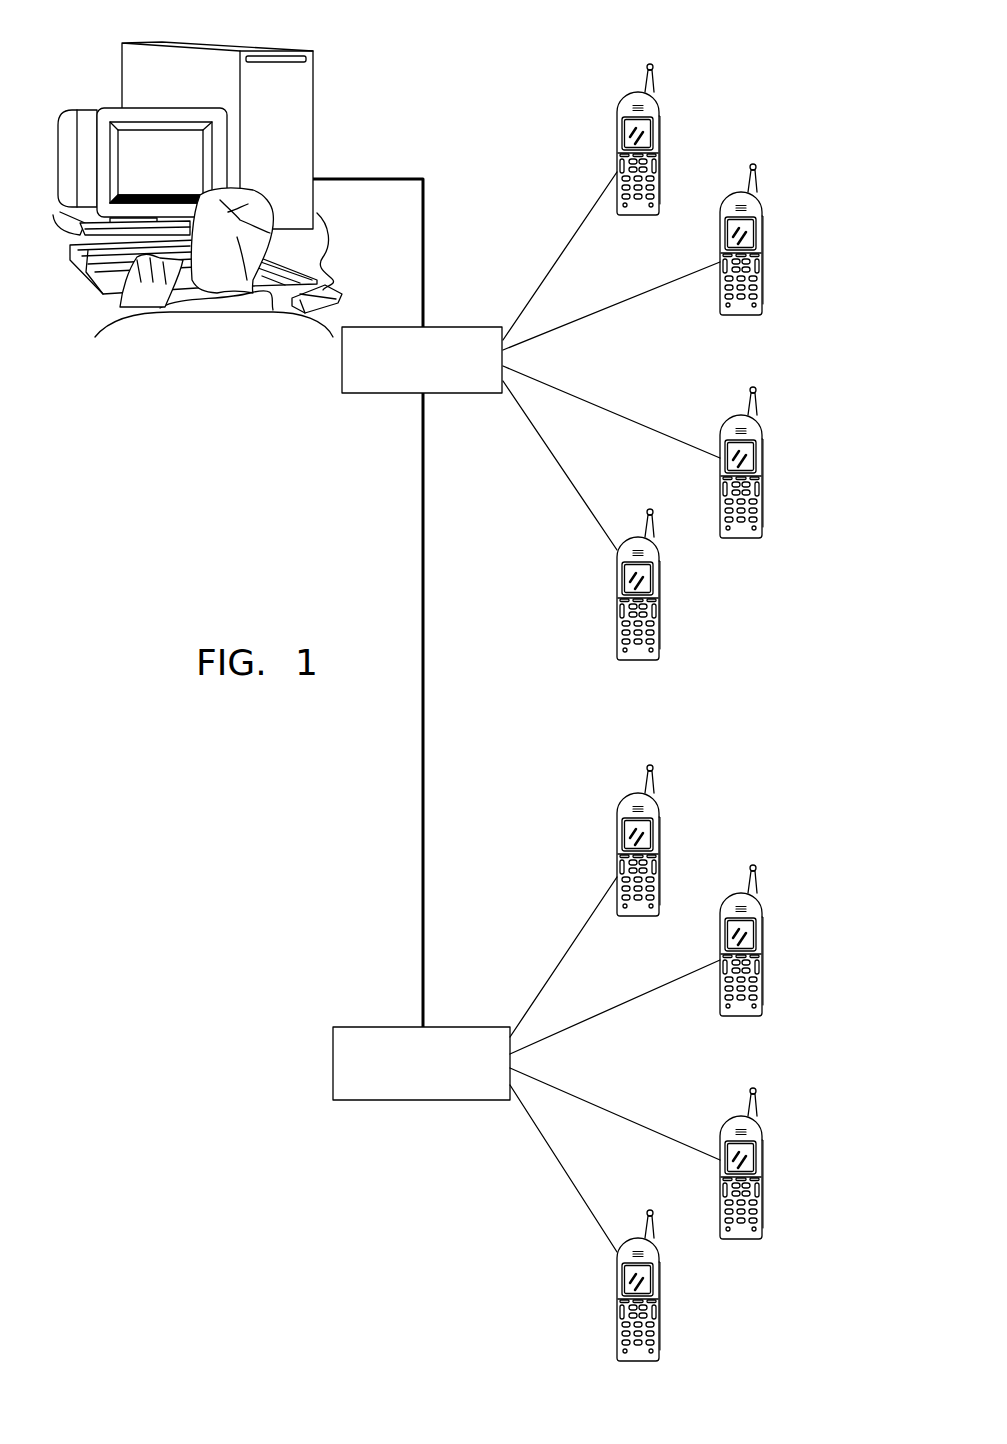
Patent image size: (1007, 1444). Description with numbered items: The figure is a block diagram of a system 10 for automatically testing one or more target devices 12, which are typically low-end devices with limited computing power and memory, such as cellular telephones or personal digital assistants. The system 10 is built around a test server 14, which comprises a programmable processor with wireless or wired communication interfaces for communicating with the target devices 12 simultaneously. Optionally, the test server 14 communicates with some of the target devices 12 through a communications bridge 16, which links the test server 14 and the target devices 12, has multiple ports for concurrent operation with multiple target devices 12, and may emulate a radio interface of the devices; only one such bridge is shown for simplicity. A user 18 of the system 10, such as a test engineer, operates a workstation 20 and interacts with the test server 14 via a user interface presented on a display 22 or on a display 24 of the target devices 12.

The system 10 is at (803, 110).
The target devices 12 is at (719, 254).
The test server 14 is at (531, 361).
The communications bridge 16 is at (526, 1064).
The user 18 is at (247, 210).
The workstation 20 is at (345, 140).
The display 22 is at (67, 110).
The display 24 is at (734, 706).